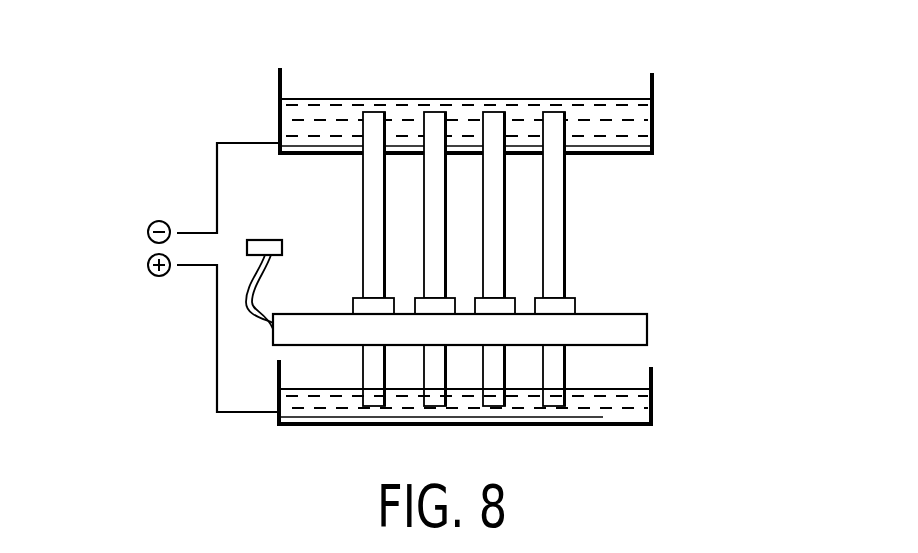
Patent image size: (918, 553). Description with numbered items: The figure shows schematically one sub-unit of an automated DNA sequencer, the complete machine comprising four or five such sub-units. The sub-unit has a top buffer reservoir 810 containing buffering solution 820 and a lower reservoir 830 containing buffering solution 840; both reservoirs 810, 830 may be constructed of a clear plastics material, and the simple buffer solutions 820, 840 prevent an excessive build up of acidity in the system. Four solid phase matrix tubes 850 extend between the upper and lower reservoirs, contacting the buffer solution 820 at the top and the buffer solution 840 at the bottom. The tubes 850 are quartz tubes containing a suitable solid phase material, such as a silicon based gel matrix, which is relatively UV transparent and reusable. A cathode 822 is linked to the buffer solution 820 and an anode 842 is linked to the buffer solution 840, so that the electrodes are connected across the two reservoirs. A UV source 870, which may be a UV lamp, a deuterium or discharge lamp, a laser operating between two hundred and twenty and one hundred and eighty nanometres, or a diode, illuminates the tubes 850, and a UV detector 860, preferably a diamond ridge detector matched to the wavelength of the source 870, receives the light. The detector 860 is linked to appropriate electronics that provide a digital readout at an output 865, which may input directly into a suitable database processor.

The top buffer reservoir 810 is at (652, 104).
The buffering solution 820 is at (593, 117).
The cathode 822 is at (217, 167).
The lower reservoir 830 is at (651, 386).
The buffering solution 840 is at (635, 416).
The anode 842 is at (217, 365).
The solid phase matrix tubes 850 is at (565, 210).
The UV detector 860 is at (645, 314).
The readout 865 is at (275, 247).
The UV source 870 is at (575, 302).